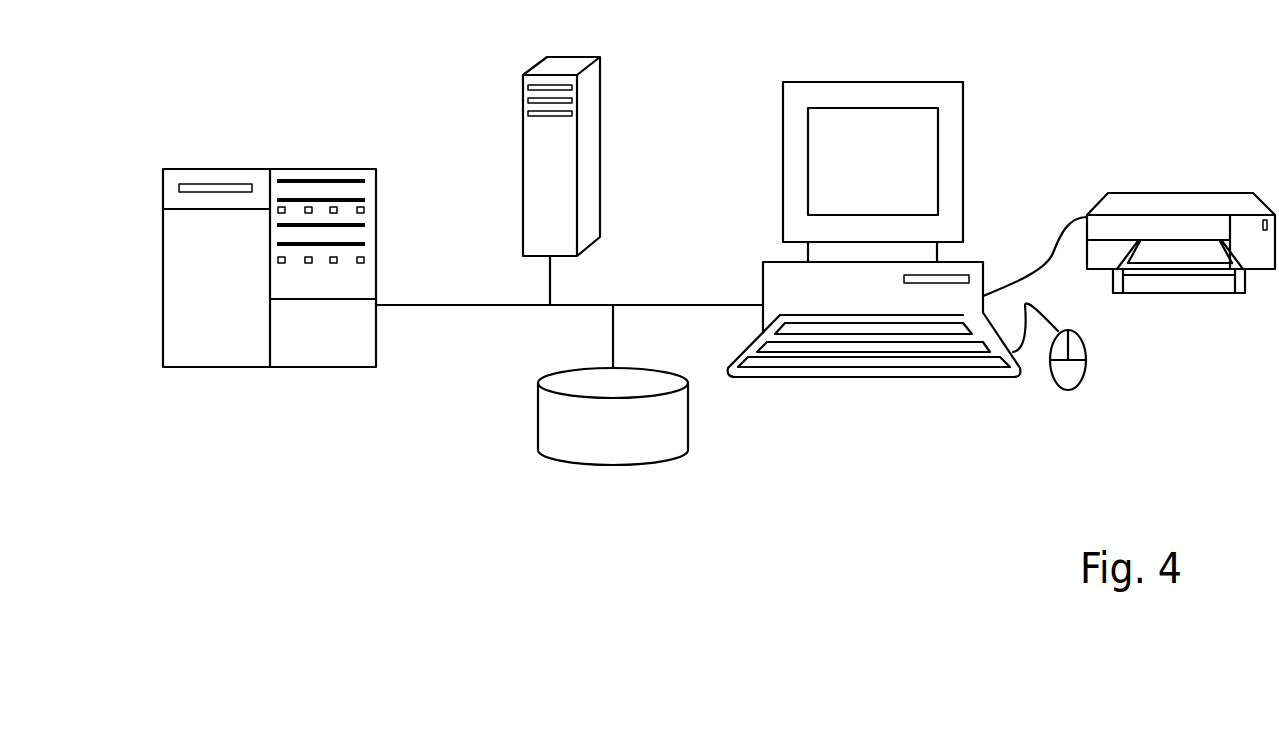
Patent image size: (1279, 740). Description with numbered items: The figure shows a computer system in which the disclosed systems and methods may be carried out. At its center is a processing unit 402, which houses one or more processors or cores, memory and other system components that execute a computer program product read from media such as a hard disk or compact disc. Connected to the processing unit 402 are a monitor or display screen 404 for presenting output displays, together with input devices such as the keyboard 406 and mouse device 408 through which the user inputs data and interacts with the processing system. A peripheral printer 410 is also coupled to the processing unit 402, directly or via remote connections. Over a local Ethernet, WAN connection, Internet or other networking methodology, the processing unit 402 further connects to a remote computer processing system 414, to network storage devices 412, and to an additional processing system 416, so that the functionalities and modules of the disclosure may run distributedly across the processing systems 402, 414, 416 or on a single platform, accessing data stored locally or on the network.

The processing unit 402 is at (767, 287).
The display screen 404 is at (963, 178).
The keyboard 406 is at (930, 377).
The mouse device 408 is at (1086, 377).
The printer 410 is at (1180, 193).
The network storage devices 412 is at (633, 463).
The remote computer processing system 414 is at (600, 144).
The processing system 416 is at (317, 169).